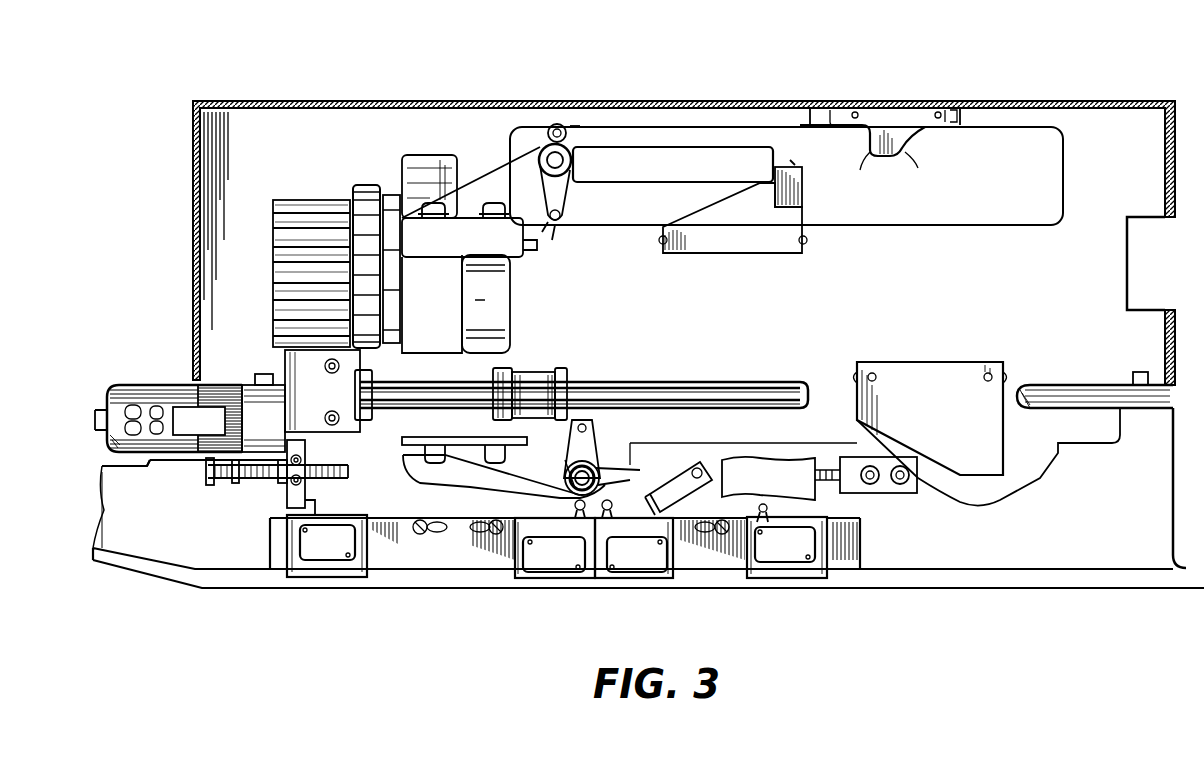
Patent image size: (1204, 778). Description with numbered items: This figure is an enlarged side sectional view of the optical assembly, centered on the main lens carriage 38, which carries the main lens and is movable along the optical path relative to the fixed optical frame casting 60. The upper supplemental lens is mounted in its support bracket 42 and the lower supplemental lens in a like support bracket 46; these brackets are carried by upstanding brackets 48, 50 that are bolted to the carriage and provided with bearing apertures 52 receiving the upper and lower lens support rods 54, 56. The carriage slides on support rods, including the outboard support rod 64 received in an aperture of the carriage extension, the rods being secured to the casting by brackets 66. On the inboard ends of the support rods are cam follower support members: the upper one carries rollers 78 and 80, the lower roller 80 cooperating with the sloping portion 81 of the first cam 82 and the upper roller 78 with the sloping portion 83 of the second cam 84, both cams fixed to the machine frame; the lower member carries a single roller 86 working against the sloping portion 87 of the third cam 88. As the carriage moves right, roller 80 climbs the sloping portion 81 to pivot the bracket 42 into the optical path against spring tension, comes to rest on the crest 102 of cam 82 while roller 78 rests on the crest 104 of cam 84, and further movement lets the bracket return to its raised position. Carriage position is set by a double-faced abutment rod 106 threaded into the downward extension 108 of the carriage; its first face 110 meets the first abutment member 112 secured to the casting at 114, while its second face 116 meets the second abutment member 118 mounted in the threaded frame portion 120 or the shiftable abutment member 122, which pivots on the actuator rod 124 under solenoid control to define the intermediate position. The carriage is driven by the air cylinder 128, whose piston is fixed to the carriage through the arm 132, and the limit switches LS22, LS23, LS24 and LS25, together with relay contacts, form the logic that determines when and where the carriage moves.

The main lens carriage 38 is at (518, 258).
The support bracket 42 is at (645, 147).
The support bracket 46 is at (600, 450).
The upstanding bracket 48 is at (505, 155).
The upstanding bracket 50 is at (510, 490).
The bearing apertures 52 is at (553, 145).
The upper lens support rod 54 is at (563, 150).
The lower lens support rod 56 is at (565, 478).
The fixed optical frame casting 60 is at (1050, 101).
The outboard support rod 64 is at (1070, 385).
The brackets 66 is at (1025, 385).
The upper cam roller 78 is at (560, 125).
The cam follower roller 80 is at (556, 232).
The sloping portion 81 is at (720, 206).
The first cam 82 is at (802, 185).
The sloping portion 83 is at (922, 158).
The second cam 84 is at (885, 125).
The roller 86 is at (582, 428).
The sloping portion 87 is at (858, 418).
The third cam 88 is at (900, 362).
The crest 102 is at (795, 165).
The crest 104 is at (876, 170).
The double-faced abutment rod 106 is at (335, 465).
The threaded downward extension 108 is at (305, 495).
The first face 110 is at (240, 483).
The first abutment member 112 is at (235, 478).
The optical casting frame mounting 114 is at (155, 485).
The second face 116 is at (348, 472).
The second abutment member 118 is at (805, 470).
The threaded portion of machine frame 120 is at (855, 493).
The shiftable abutment member 122 is at (611, 507).
The actuator rod 124 is at (700, 462).
The air cylinder 128 is at (242, 392).
The arm 132 is at (265, 385).
The limit switch LS22 is at (340, 560).
The limit switch LS23 is at (620, 572).
The limit switch LS24 is at (590, 600).
The limit switch LS25 is at (830, 600).